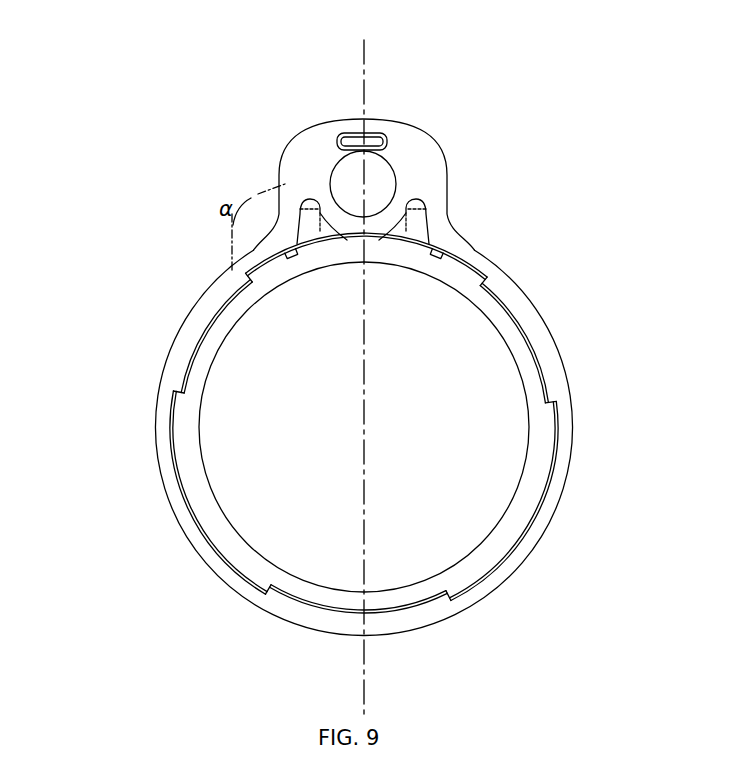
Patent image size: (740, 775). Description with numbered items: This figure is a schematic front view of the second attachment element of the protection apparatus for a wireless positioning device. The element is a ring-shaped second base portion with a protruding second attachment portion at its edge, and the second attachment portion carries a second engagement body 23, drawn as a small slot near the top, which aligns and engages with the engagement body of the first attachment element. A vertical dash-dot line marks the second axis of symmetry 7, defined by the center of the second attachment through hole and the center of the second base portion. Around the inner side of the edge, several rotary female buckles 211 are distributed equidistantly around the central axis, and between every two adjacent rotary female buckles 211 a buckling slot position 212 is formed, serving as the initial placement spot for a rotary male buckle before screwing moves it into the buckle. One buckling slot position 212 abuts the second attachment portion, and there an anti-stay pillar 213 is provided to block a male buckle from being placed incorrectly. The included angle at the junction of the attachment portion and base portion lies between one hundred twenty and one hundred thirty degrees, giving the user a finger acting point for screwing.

The second axis of symmetry 7 is at (360, 63).
The second engagement body 23 is at (370, 138).
The rotary female buckle 211 is at (213, 316).
The buckling slot position 212 is at (435, 244).
The anti-stay pillar 213 is at (293, 260).